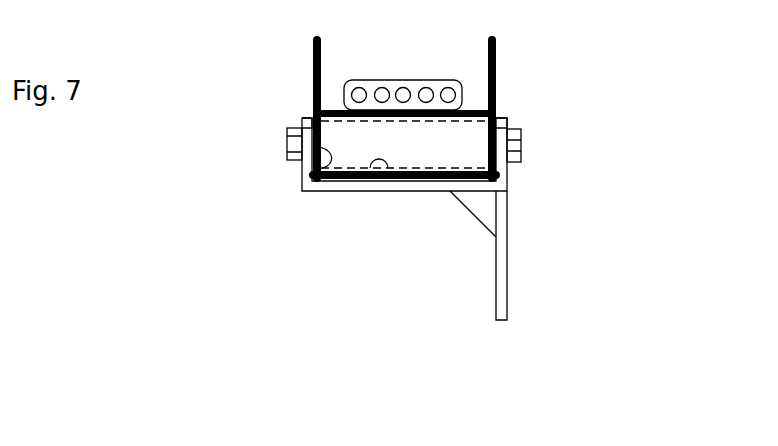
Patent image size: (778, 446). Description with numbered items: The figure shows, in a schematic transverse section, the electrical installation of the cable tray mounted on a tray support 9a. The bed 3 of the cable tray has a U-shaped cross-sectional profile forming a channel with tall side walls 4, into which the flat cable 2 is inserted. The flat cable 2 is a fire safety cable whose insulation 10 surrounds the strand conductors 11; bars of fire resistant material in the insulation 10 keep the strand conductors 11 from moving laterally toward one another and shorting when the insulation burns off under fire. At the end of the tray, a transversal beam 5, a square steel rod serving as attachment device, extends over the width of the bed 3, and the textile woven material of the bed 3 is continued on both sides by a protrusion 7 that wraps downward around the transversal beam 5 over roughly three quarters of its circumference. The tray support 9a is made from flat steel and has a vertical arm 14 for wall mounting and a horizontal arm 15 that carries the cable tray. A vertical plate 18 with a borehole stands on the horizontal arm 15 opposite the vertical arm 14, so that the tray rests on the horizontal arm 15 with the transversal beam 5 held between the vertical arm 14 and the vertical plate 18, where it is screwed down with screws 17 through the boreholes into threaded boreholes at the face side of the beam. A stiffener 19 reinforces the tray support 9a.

The flat cable 2 is at (414, 60).
The bed 3 is at (483, 79).
The side walls 4 is at (496, 62).
The transversal beam 5 is at (375, 172).
The protrusion 7 is at (311, 174).
The tray support 9a is at (526, 255).
The insulation 10 is at (403, 71).
The strand conductors 11 is at (425, 88).
The vertical arm 14 is at (498, 118).
The horizontal arm 15 is at (335, 193).
The screws 17 is at (287, 140).
The vertical plate 18 is at (303, 118).
The stiffener 19 is at (476, 208).